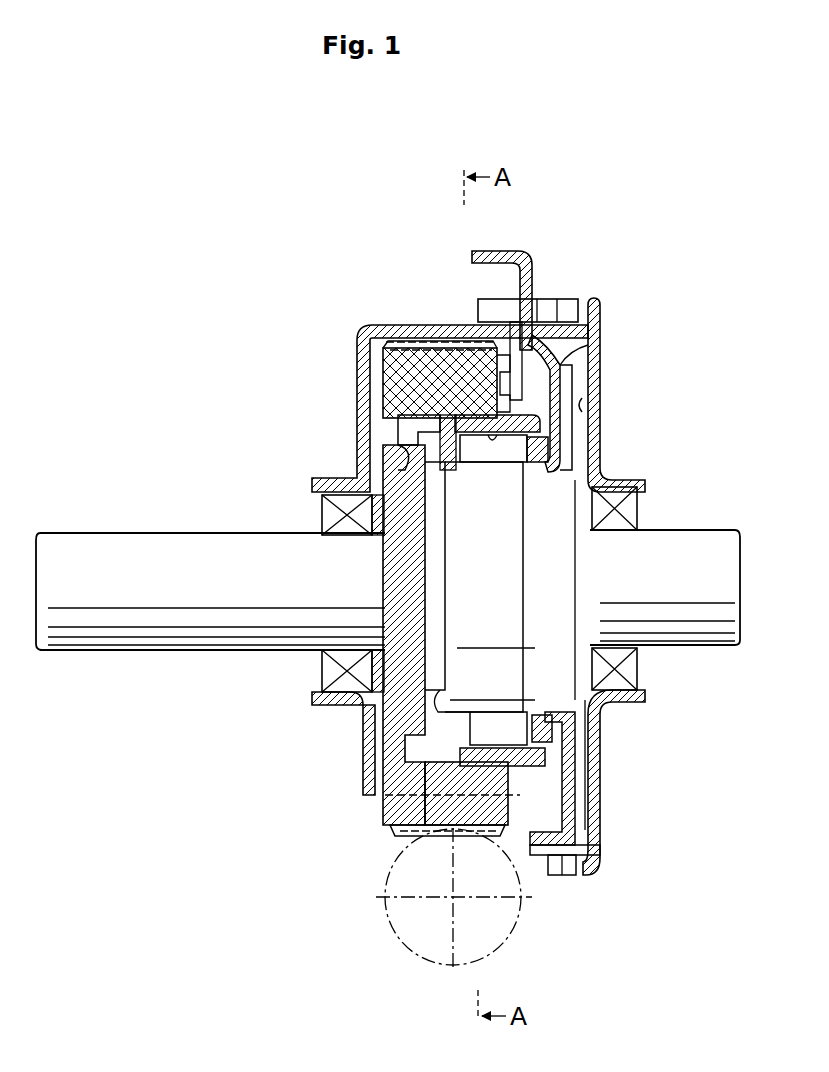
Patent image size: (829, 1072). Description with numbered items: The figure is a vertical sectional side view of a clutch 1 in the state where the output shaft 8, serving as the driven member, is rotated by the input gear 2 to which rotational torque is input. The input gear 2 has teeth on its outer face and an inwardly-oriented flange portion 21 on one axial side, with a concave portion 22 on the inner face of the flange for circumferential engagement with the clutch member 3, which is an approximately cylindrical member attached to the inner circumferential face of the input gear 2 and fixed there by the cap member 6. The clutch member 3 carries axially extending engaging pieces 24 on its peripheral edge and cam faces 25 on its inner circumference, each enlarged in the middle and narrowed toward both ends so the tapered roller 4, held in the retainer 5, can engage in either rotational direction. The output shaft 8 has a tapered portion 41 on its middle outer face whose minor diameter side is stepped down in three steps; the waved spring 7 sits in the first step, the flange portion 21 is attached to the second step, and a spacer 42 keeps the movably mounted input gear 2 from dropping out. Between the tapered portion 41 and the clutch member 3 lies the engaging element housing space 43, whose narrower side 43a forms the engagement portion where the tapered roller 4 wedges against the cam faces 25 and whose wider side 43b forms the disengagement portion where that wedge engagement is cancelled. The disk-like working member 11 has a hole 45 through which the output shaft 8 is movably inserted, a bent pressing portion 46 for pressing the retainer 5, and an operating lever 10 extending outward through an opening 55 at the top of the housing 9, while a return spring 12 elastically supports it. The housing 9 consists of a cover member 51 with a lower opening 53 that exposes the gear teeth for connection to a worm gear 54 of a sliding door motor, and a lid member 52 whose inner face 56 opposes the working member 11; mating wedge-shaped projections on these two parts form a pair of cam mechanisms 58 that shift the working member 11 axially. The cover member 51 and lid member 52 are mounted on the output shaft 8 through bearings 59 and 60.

The clutch 1 is at (333, 304).
The input gear 2 is at (392, 376).
The clutch member 3 is at (420, 345).
The tapered roller 4 is at (485, 462).
The retainer 5 is at (574, 420).
The cap member 6 is at (566, 380).
The waved spring 7 is at (388, 462).
The output shaft 8 is at (184, 552).
The housing 9 is at (436, 322).
The operating lever 10 is at (503, 255).
The working member 11 is at (558, 785).
The return spring 12 is at (556, 298).
The inwardly-oriented flange portion 21 is at (433, 508).
The concave portion 22 is at (414, 432).
The engaging pieces 24 is at (372, 362).
The cam faces 25 is at (470, 412).
The tapered portion 41 is at (528, 712).
The spacer 42 is at (366, 712).
The engaging element housing space 43 is at (480, 712).
The narrower side 43a is at (560, 690).
The wider side 43b is at (440, 690).
The hole 45 is at (552, 455).
The pressing portion 46 is at (532, 462).
The cover member 51 is at (364, 326).
The lid member 52 is at (603, 304).
The opening 53 is at (382, 838).
The worm gear 54 is at (412, 952).
The opening 55 is at (503, 322).
The inner face 56 is at (586, 410).
The cam mechanisms 58 is at (590, 445).
The bearing 59 is at (326, 672).
The bearing 60 is at (640, 668).